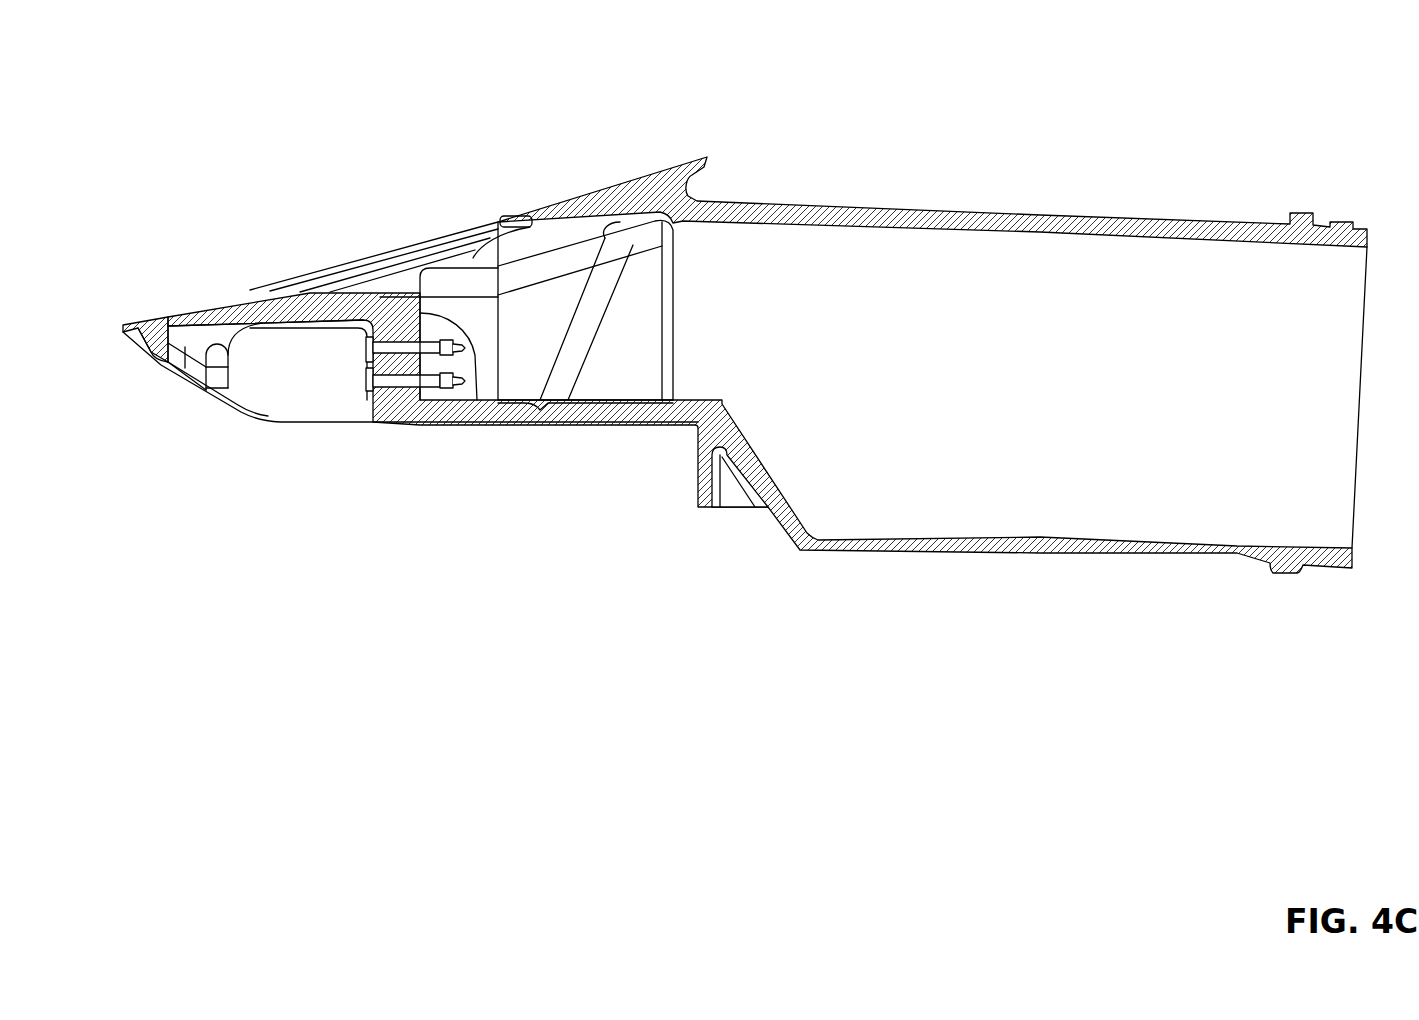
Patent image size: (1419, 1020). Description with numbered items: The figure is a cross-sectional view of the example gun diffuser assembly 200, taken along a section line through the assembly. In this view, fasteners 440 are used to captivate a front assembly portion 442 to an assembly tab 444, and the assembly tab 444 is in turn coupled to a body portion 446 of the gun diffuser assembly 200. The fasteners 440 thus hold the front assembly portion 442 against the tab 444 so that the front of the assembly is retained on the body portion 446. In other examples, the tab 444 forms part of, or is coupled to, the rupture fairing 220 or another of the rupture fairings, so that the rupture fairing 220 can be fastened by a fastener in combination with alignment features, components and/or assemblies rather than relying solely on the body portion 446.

The gun diffuser assembly 200 is at (1188, 56).
The rupture fairing 220 is at (408, 250).
The fasteners 440 is at (386, 350).
The front assembly portion 442 is at (333, 353).
The assembly tab 444 is at (477, 400).
The body portion 446 is at (585, 315).